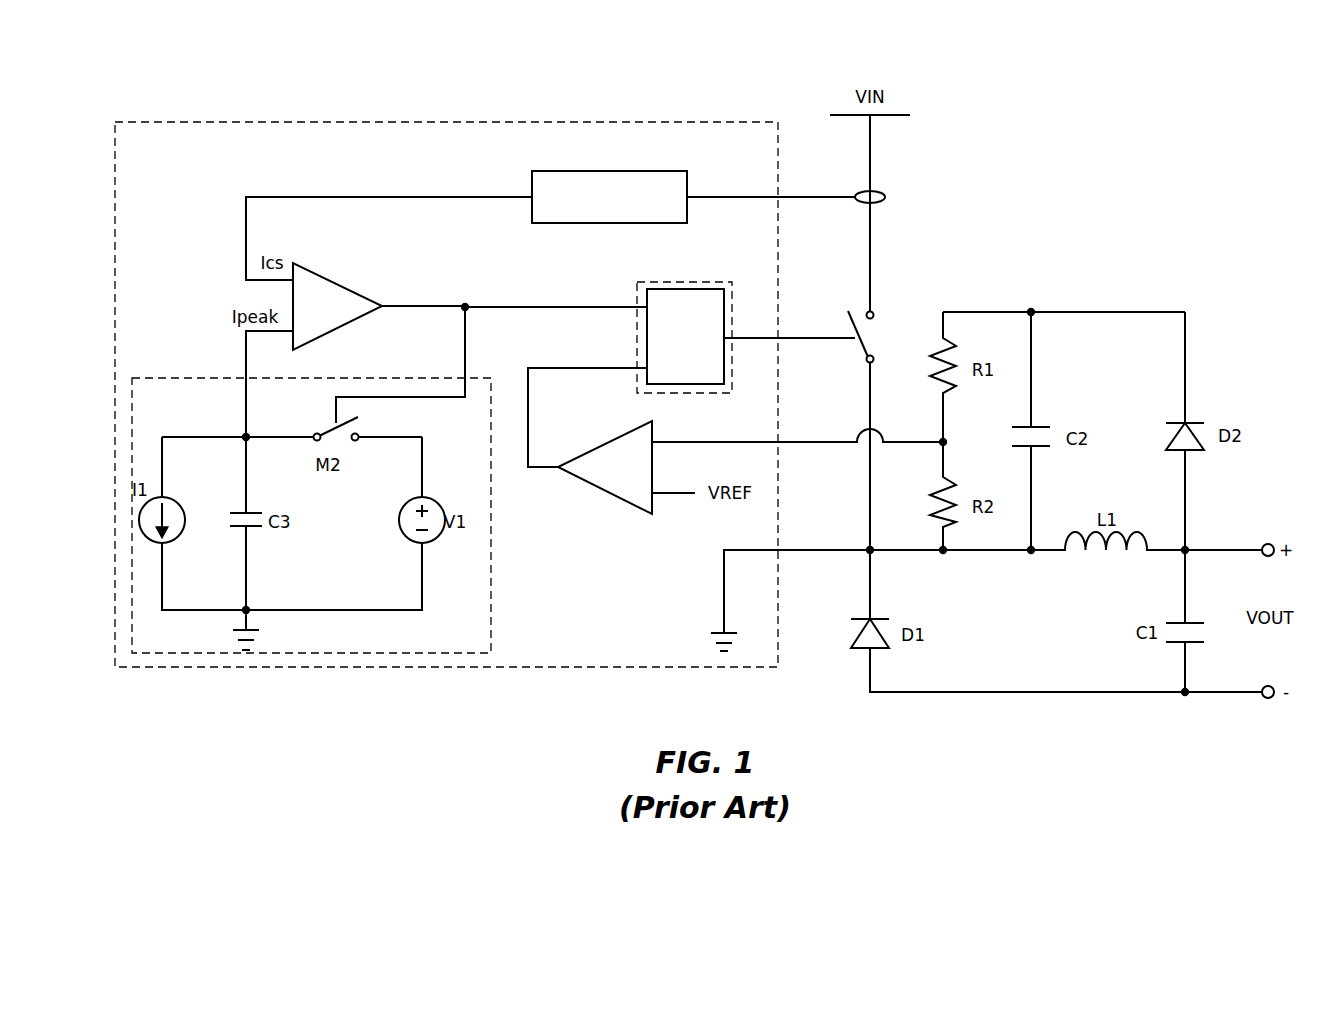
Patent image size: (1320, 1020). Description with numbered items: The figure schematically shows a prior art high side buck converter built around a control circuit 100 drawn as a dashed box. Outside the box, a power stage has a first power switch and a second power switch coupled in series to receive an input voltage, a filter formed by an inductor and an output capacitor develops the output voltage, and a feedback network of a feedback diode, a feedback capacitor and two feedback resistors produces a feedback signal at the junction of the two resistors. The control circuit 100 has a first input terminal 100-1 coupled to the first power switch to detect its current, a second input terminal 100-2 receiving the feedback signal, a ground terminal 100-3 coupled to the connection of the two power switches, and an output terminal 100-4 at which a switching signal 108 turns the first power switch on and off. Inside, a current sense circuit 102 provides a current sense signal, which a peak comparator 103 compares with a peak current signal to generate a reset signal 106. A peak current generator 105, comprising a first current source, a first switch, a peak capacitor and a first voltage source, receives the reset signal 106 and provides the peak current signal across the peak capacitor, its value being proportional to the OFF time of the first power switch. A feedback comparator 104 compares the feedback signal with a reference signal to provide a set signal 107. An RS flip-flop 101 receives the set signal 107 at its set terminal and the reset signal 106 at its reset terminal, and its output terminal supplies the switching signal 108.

The control circuit 100 is at (476, 119).
The RS flip-flop 101 is at (692, 281).
The current sense circuit 102 is at (613, 169).
The peak comparator 103 is at (341, 283).
The feedback comparator 104 is at (601, 446).
The peak current generator 105 is at (188, 377).
The reset signal 106 is at (556, 296).
The set signal 107 is at (587, 407).
The switching signal 108 is at (752, 327).
The first input terminal 100-1 is at (786, 186).
The second input terminal 100-2 is at (797, 428).
The ground terminal 100-3 is at (790, 587).
The output terminal 100-4 is at (845, 337).